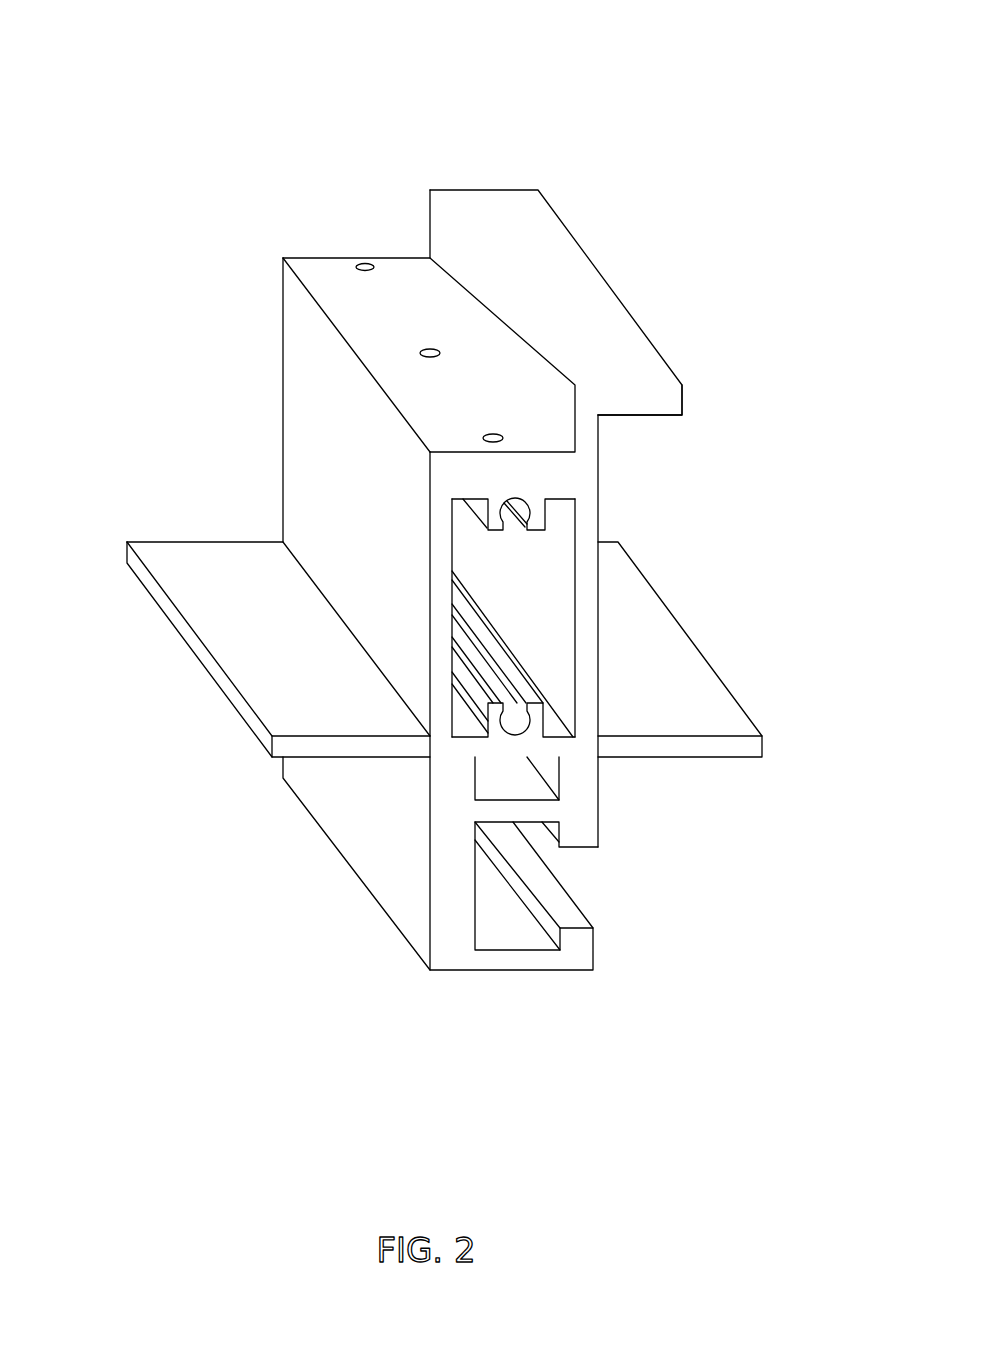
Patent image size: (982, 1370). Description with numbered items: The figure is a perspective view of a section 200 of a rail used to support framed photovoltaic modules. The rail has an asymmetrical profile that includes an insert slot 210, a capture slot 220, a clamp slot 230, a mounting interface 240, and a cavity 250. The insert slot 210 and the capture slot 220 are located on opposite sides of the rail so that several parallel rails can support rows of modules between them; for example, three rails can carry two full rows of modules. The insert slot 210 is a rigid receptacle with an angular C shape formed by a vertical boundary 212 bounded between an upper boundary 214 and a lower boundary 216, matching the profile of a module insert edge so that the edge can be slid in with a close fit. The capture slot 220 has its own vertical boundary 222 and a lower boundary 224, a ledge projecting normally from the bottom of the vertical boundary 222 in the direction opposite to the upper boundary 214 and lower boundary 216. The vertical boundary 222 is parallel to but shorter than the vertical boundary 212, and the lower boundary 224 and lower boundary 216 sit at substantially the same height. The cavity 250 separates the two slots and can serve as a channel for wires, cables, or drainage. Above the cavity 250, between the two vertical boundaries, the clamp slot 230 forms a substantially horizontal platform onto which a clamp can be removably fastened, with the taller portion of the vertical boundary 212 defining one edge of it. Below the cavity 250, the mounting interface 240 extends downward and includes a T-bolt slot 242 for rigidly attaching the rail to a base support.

The section of the rail 200 is at (289, 77).
The insert slot 210 is at (805, 384).
The vertical boundary 212 is at (585, 517).
The upper boundary 214 is at (665, 400).
The lower boundary 216 is at (742, 747).
The capture slot 220 is at (120, 320).
The vertical boundary 222 is at (283, 440).
The lower boundary 224 is at (283, 750).
The clamp slot 230 is at (265, 182).
The mounting interface 240 is at (698, 762).
The T-bolt slot 242 is at (508, 940).
The cavity 250 is at (513, 609).